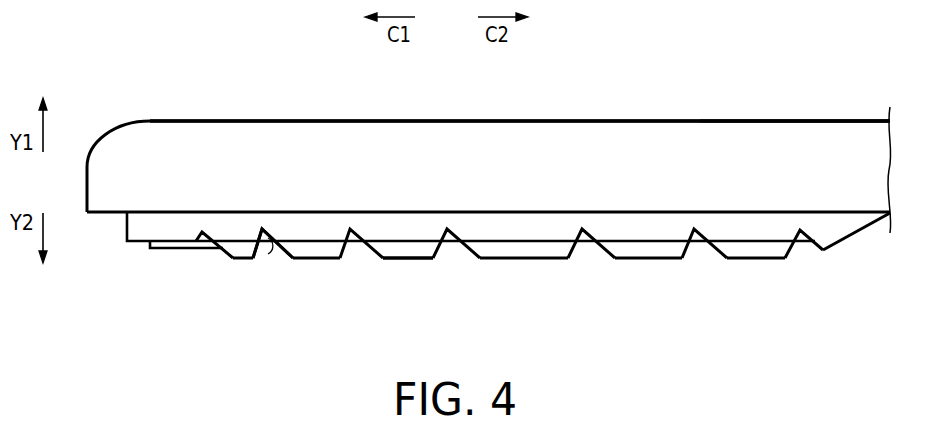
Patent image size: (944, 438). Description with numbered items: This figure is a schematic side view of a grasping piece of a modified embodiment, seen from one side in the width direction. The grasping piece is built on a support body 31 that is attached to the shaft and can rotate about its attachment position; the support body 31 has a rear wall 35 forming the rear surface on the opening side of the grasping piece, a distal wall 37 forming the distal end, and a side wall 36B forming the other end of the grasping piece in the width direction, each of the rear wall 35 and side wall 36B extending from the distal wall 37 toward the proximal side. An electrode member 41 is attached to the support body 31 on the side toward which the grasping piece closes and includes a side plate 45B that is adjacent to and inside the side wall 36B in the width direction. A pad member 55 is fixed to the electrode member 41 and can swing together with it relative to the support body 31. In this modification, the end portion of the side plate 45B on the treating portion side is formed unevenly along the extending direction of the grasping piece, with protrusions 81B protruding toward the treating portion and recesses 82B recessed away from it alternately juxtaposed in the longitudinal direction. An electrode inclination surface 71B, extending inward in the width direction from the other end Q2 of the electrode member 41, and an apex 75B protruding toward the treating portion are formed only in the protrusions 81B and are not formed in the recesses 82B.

The support body 31 is at (537, 136).
The rear wall 35 is at (444, 121).
The second side wall 36B is at (718, 145).
The distal wall 37 is at (100, 183).
The electrode member 41 is at (827, 229).
The side plate 45B is at (645, 222).
The pad member 55 is at (259, 248).
The second electrode inclination surface 71B is at (502, 258).
The second apex 75B is at (313, 258).
The protrusion 81B is at (228, 258).
The recess 82B is at (290, 253).
The other end of the electrode member in the width direction Q2 is at (398, 258).